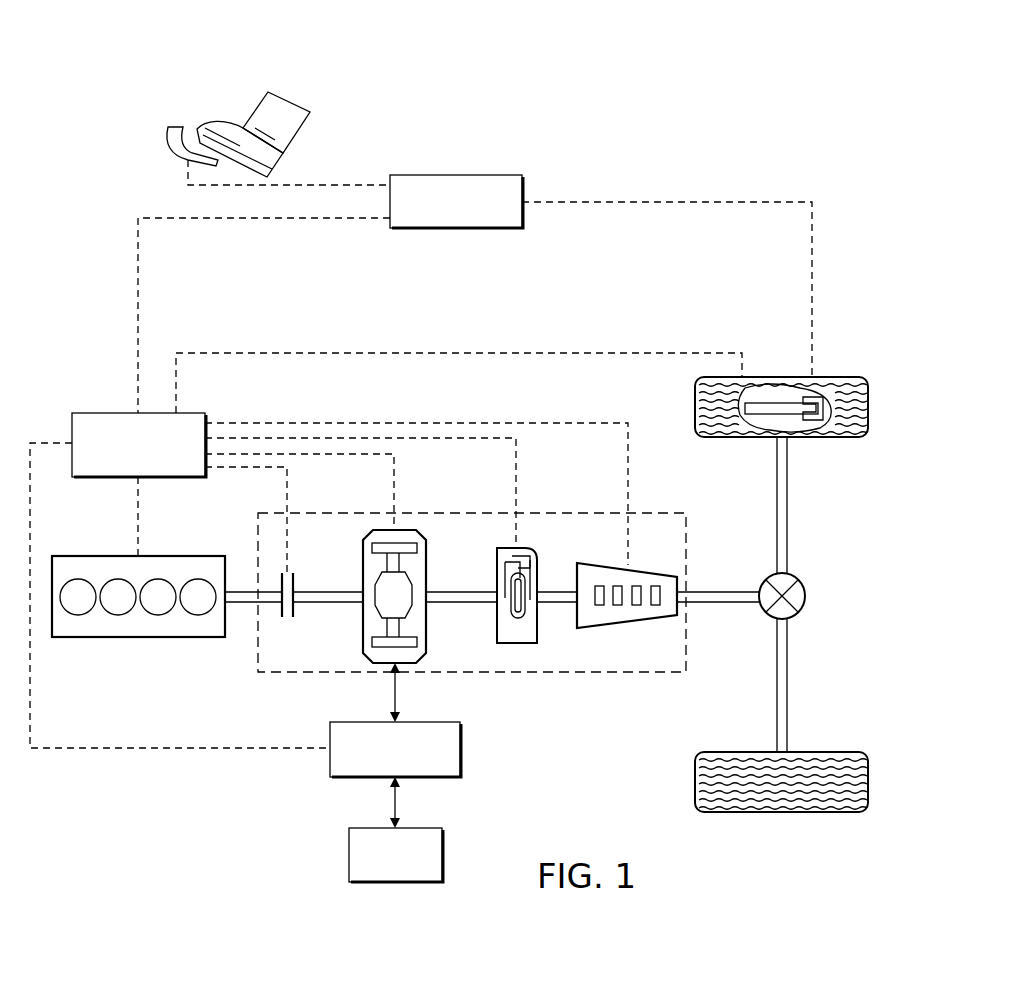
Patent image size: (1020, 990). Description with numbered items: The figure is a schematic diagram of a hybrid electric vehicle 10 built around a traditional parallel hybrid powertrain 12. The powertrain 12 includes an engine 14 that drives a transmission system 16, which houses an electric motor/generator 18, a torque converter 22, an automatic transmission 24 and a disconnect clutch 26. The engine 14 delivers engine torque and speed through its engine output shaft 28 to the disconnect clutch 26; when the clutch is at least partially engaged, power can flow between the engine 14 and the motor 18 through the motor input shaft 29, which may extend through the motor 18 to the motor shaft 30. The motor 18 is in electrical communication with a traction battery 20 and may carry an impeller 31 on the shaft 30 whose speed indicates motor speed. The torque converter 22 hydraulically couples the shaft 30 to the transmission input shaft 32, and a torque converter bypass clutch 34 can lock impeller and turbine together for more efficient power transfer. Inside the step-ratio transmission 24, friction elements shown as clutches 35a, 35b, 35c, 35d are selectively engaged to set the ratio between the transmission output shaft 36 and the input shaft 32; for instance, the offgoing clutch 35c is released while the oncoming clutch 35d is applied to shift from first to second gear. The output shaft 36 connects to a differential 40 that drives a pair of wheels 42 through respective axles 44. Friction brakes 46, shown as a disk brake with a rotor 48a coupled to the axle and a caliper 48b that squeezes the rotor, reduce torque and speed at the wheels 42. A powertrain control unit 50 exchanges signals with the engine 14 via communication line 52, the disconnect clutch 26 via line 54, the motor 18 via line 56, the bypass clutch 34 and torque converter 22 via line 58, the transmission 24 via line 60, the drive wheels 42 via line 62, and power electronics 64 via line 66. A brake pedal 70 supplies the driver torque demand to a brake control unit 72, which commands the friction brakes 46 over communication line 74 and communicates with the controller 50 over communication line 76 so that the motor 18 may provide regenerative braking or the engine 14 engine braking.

The hybrid electric vehicle 10 is at (650, 66).
The parallel hybrid powertrain 12 is at (243, 790).
The engine 14 is at (98, 556).
The transmission system 16 is at (483, 513).
The electric motor/generator 18 is at (381, 571).
The traction battery 20 is at (349, 852).
The torque converter 22 is at (533, 614).
The automatic transmission 24 is at (652, 609).
The disconnect clutch 26 is at (296, 617).
The engine output shaft 28 is at (255, 592).
The motor input shaft 29 is at (355, 592).
The motor shaft 30 is at (470, 592).
The impeller 31 is at (408, 545).
The transmission input shaft 32 is at (560, 592).
The torque converter bypass clutch 34 is at (522, 555).
The clutch 35a is at (599, 586).
The clutch 35b is at (617, 586).
The offgoing clutch 35c is at (636, 586).
The oncoming clutch 35d is at (655, 586).
The transmission output shaft 36 is at (723, 592).
The differential 40 is at (806, 597).
The wheels 42 is at (757, 377).
The axles 44 is at (789, 520).
The friction brakes 46 is at (830, 450).
The rotor 48a is at (793, 403).
The caliper 48b is at (830, 398).
The powertrain control unit 50 is at (105, 413).
The communication line 52 is at (140, 530).
The communication line 54 is at (287, 503).
The communication line 56 is at (394, 490).
The communication line 58 is at (516, 480).
The communication line 60 is at (628, 480).
The communication line 62 is at (412, 353).
The power electronics 64 is at (460, 750).
The communication line 66 is at (157, 748).
The brake pedal 70 is at (175, 150).
The brake control unit 72 is at (462, 175).
The communication line 74 is at (663, 202).
The communication line 76 is at (140, 305).